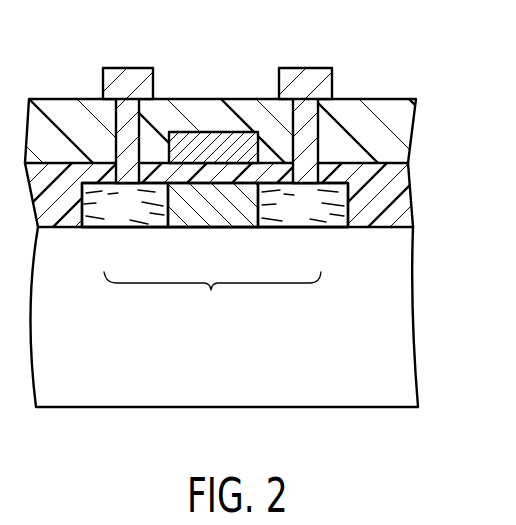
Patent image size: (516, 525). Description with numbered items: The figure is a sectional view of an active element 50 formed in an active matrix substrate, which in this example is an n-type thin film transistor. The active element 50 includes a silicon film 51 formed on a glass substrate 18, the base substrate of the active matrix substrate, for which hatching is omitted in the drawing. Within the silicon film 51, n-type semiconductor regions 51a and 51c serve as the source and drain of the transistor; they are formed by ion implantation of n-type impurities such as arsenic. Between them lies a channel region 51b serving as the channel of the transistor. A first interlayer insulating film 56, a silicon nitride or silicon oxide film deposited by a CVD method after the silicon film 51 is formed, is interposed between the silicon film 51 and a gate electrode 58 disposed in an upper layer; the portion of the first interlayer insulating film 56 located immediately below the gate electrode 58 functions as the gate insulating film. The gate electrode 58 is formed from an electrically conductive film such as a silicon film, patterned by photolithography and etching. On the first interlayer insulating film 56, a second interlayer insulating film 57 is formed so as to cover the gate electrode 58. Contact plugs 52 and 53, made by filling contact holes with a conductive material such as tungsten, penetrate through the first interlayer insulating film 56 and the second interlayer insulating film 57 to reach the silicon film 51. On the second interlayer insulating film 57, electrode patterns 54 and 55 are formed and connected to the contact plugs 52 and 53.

The glass substrate 18 is at (408, 309).
The active element 50 is at (212, 301).
The silicon film 51 is at (278, 232).
The n-type semiconductor region 51a is at (134, 227).
The channel region 51b is at (209, 219).
The n-type semiconductor region 51c is at (311, 223).
The contact plug 52 is at (124, 135).
The contact plug 53 is at (306, 132).
The electrode pattern 54 is at (134, 70).
The electrode pattern 55 is at (299, 74).
The first interlayer insulating film 56 is at (399, 182).
The second interlayer insulating film 57 is at (403, 129).
The gate electrode 58 is at (221, 133).